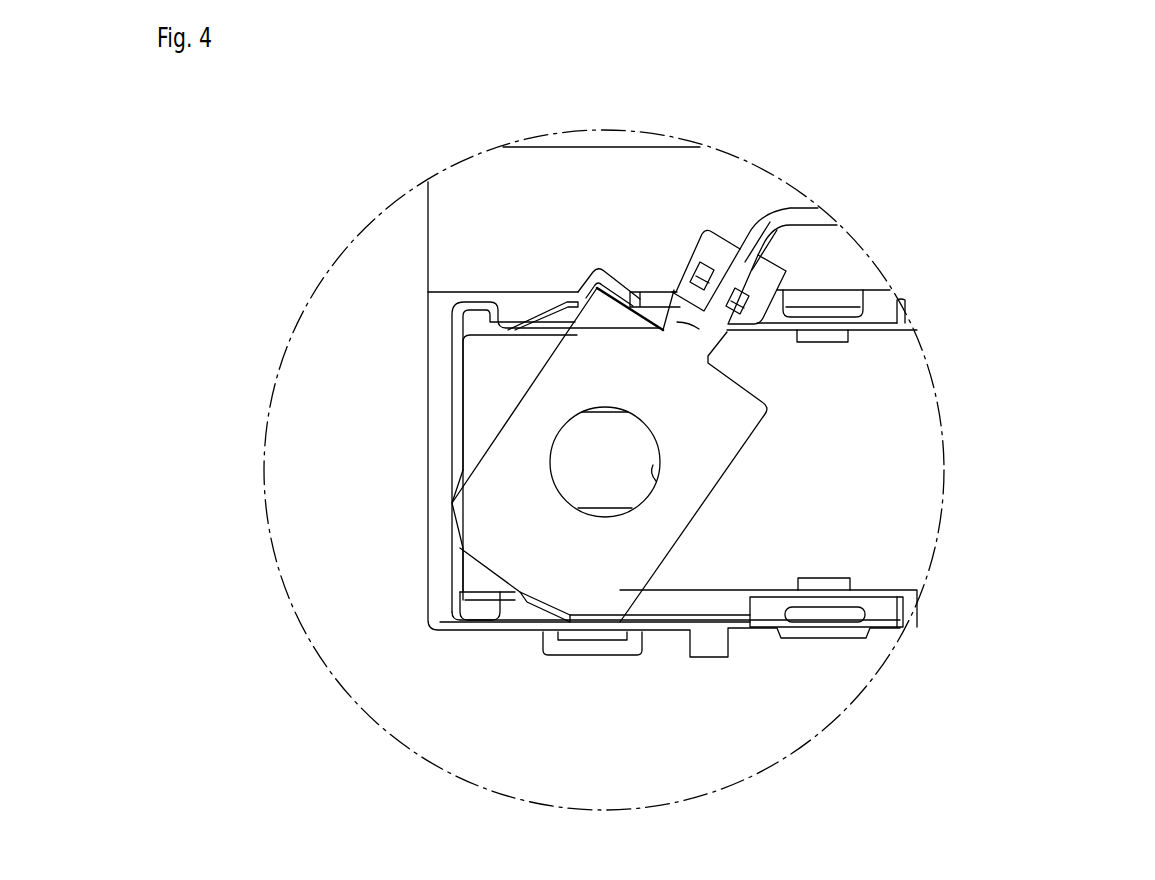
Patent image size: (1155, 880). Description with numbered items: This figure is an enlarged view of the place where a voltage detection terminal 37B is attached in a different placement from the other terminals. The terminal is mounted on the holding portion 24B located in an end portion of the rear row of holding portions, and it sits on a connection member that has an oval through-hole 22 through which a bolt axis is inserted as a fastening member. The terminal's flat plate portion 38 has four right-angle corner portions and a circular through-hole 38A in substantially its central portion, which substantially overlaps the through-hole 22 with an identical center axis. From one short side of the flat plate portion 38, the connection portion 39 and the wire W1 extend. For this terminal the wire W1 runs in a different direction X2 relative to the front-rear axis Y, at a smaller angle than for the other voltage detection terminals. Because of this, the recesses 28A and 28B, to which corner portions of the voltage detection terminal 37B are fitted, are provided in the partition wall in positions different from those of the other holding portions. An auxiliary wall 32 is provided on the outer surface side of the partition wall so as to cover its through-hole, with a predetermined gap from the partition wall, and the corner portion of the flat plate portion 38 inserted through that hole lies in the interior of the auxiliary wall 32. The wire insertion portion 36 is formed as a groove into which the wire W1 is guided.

The wire insertion portion 36 is at (545, 177).
The holding portion 24B is at (782, 687).
The wire W1 is at (815, 220).
The connection portion 39 is at (730, 273).
The recess 28B is at (588, 302).
The flat plate portion 38 is at (557, 582).
The voltage detection terminal 37B is at (797, 400).
The recess 28A is at (557, 605).
The auxiliary wall 32 is at (583, 658).
The circular through-hole 38A is at (657, 470).
The through-hole 22 is at (612, 410).
The extending direction of the wire X2 is at (643, 413).
The front-rear axis Y is at (676, 367).